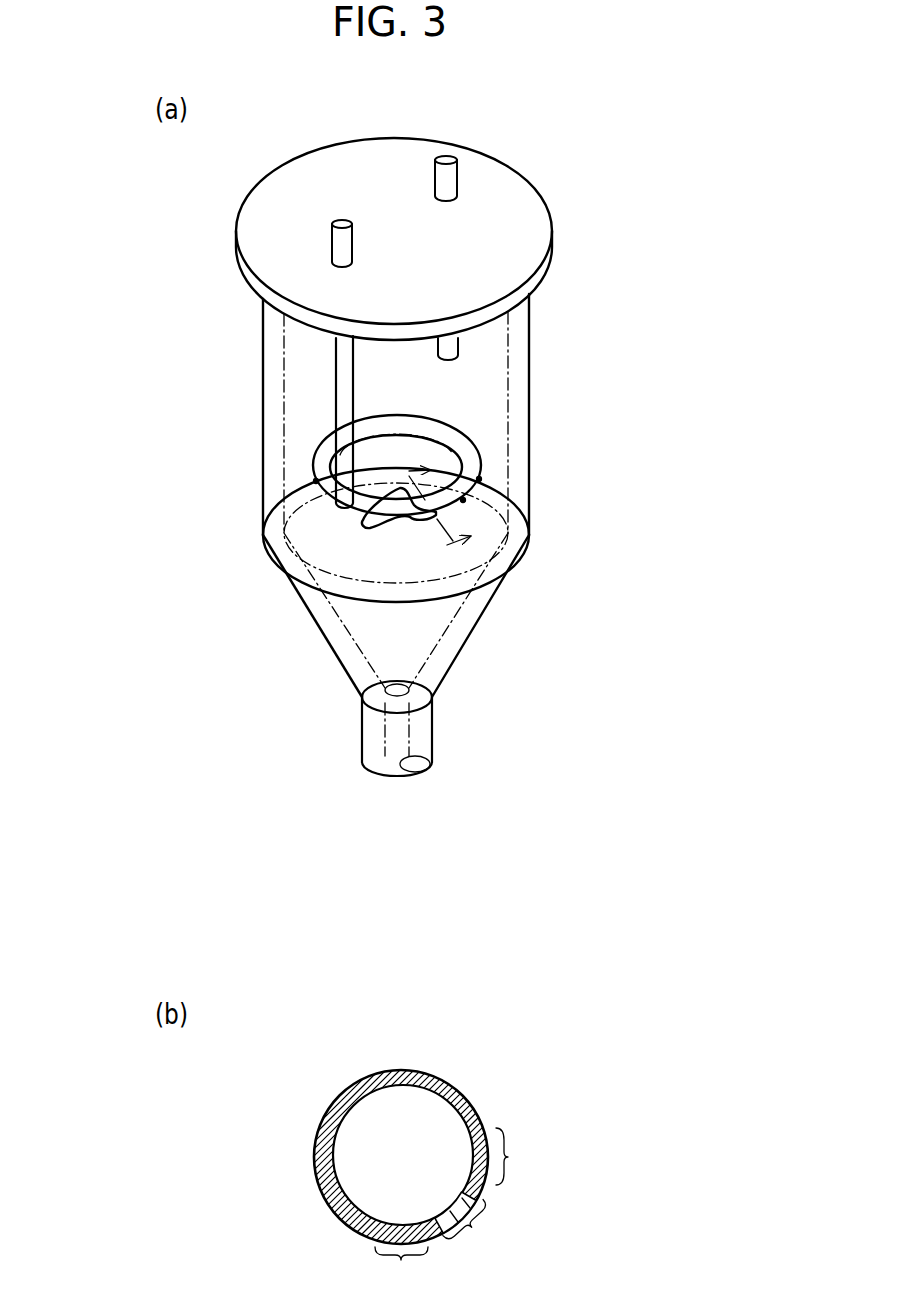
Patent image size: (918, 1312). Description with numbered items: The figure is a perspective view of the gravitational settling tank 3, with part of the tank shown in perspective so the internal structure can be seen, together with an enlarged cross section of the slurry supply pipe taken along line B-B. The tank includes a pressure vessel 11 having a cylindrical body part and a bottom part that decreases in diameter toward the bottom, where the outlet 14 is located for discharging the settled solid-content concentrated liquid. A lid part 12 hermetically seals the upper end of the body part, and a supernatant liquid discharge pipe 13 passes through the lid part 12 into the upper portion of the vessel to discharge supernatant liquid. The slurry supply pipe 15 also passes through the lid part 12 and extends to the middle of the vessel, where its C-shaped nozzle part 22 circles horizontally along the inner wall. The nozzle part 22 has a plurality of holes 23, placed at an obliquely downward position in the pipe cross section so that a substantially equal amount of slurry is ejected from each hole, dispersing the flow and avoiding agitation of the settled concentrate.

The gravitational settling tank 3 is at (184, 262).
The pressure vessel 11 is at (256, 534).
The lid part 12 is at (524, 233).
The supernatant liquid discharge pipe 13 is at (465, 171).
The outlet 14 is at (402, 783).
The slurry supply pipe 15 is at (322, 213).
The nozzle part 22 is at (467, 448).
The holes 23 is at (463, 500).